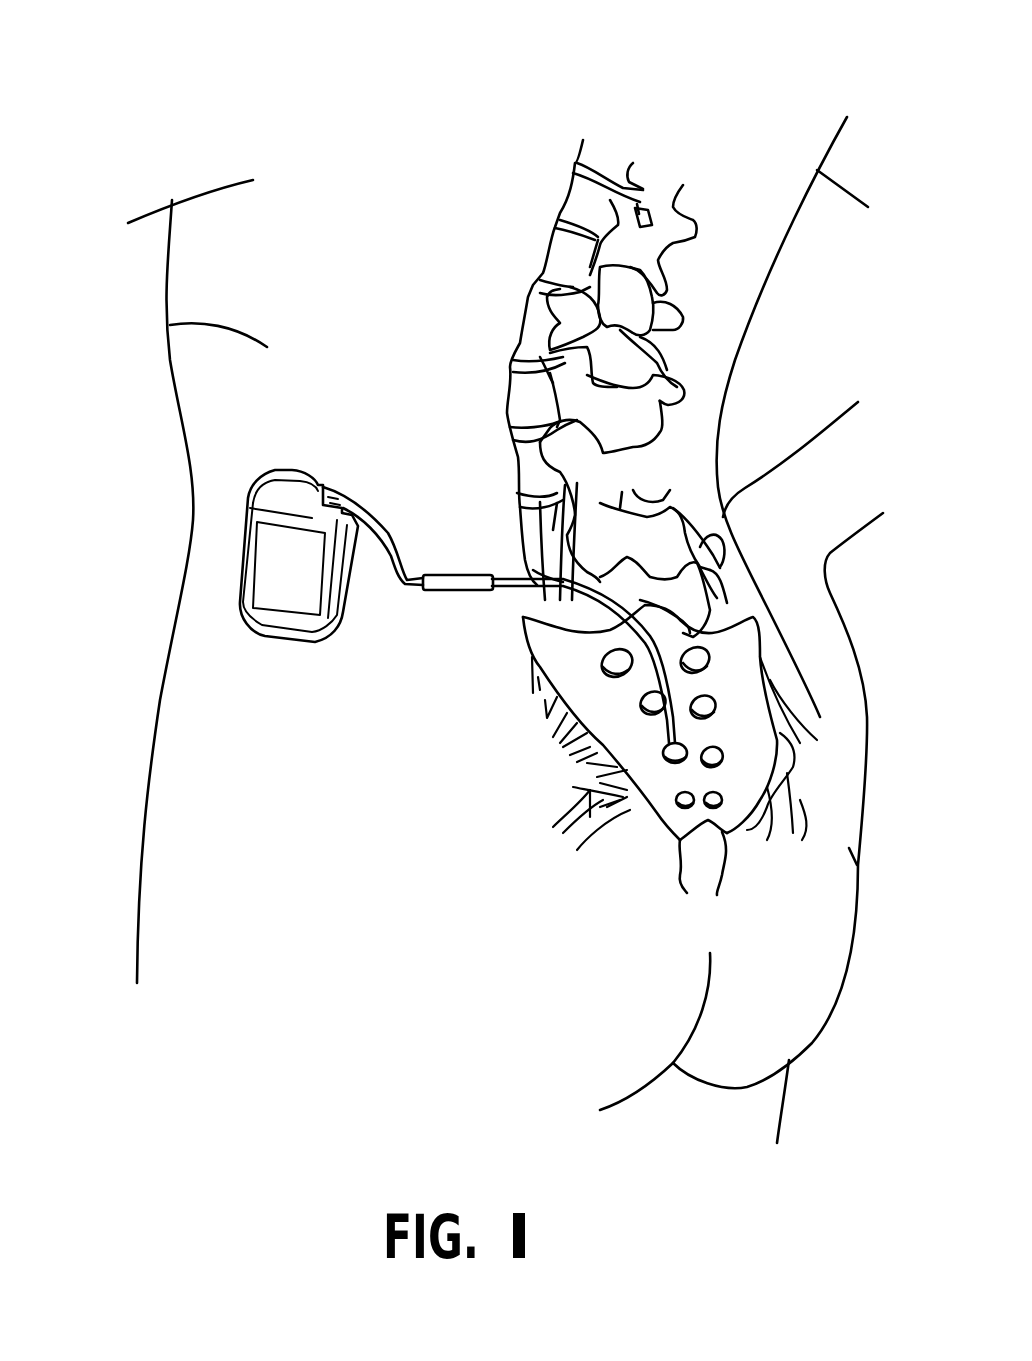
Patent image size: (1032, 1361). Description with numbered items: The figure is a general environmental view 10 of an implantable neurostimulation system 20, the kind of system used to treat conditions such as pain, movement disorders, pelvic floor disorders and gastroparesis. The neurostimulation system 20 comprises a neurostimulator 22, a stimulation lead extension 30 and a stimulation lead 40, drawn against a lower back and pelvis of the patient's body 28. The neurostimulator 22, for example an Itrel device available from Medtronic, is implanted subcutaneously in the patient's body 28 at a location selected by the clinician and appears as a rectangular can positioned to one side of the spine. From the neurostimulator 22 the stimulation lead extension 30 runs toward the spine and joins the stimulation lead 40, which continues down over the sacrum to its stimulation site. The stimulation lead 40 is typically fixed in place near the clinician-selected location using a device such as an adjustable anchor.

The general environmental view 10 is at (262, 98).
The neurostimulation system 20 is at (152, 510).
The neurostimulator 22 is at (267, 578).
The patient's body 28 is at (170, 325).
The stimulation lead extension 30 is at (402, 581).
The stimulation lead 40 is at (493, 586).